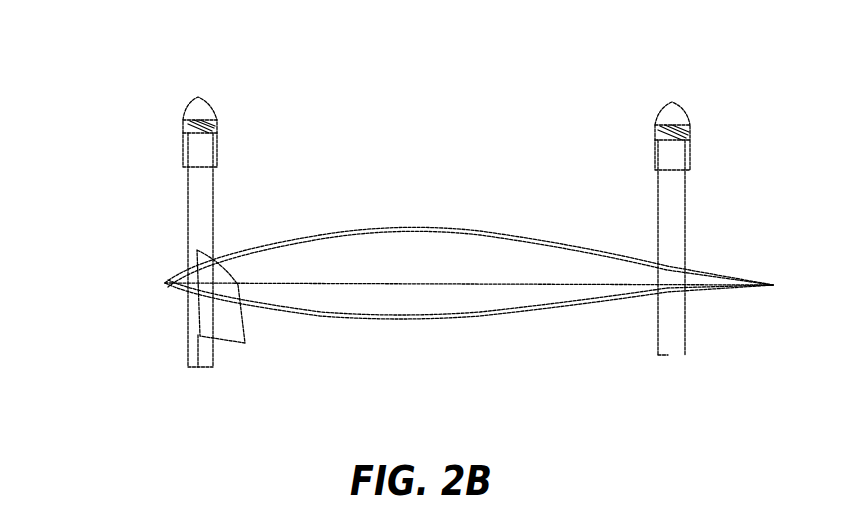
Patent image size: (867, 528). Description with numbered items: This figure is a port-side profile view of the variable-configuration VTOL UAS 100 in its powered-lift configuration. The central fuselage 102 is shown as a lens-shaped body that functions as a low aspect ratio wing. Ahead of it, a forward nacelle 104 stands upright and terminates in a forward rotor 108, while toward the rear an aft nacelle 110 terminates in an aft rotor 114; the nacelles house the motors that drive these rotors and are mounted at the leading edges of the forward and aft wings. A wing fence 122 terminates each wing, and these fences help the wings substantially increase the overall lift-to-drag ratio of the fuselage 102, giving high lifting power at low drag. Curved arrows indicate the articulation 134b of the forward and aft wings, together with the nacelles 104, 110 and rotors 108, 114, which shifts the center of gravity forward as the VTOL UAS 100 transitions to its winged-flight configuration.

The variable-configuration VTOL UAS 100 is at (110, 74).
The fuselage 102 is at (425, 322).
The forward nacelle 104 is at (231, 220).
The forward rotor 108 is at (207, 117).
The aft nacelle 110 is at (701, 214).
The aft rotor 114 is at (675, 123).
The wing fence 122 is at (222, 333).
The articulation of the forward and aft wings 134b is at (165, 128).